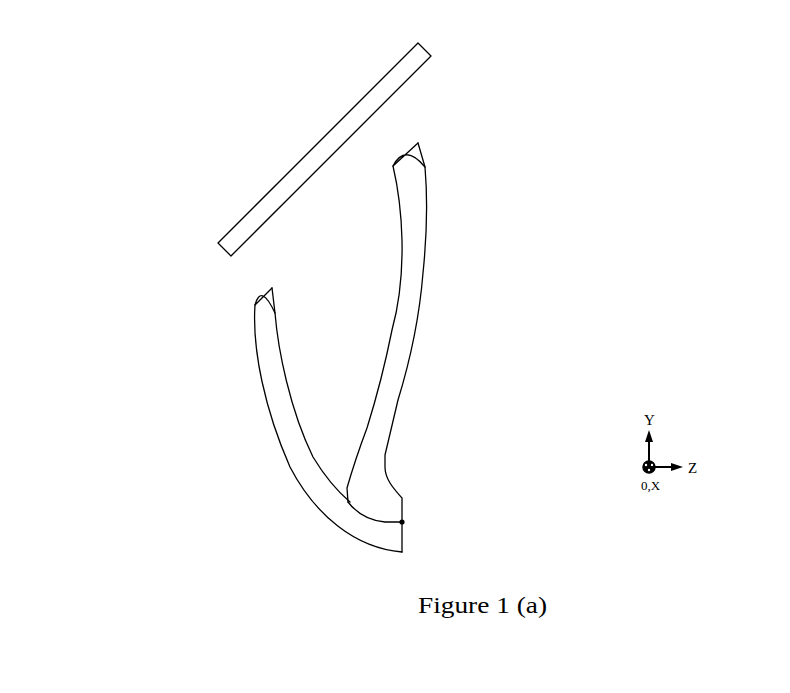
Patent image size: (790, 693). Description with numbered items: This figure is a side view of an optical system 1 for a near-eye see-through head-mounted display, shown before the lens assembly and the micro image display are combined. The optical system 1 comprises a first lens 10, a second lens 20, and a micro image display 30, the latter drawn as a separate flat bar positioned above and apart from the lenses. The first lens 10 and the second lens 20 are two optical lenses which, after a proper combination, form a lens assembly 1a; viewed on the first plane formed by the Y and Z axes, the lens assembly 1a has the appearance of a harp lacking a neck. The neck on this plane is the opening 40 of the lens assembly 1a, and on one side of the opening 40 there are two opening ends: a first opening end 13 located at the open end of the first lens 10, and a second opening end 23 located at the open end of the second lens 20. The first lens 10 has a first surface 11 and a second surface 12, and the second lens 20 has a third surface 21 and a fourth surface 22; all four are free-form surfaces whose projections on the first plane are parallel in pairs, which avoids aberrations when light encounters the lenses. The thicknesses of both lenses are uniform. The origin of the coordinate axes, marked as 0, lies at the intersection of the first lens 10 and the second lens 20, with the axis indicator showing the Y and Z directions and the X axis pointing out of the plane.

The optical system 1 is at (118, 136).
The lens assembly 1a is at (340, 347).
The first lens 10 is at (307, 420).
The first surface 11 is at (258, 358).
The second surface 12 is at (280, 360).
The first opening end 13 is at (270, 303).
The second lens 20 is at (417, 332).
The third surface 21 is at (402, 245).
The fourth surface 22 is at (427, 220).
The second opening end 23 is at (420, 162).
The micro image display 30 is at (421, 56).
The opening 40 is at (276, 273).
The origin of coordinate axis 0 is at (405, 522).